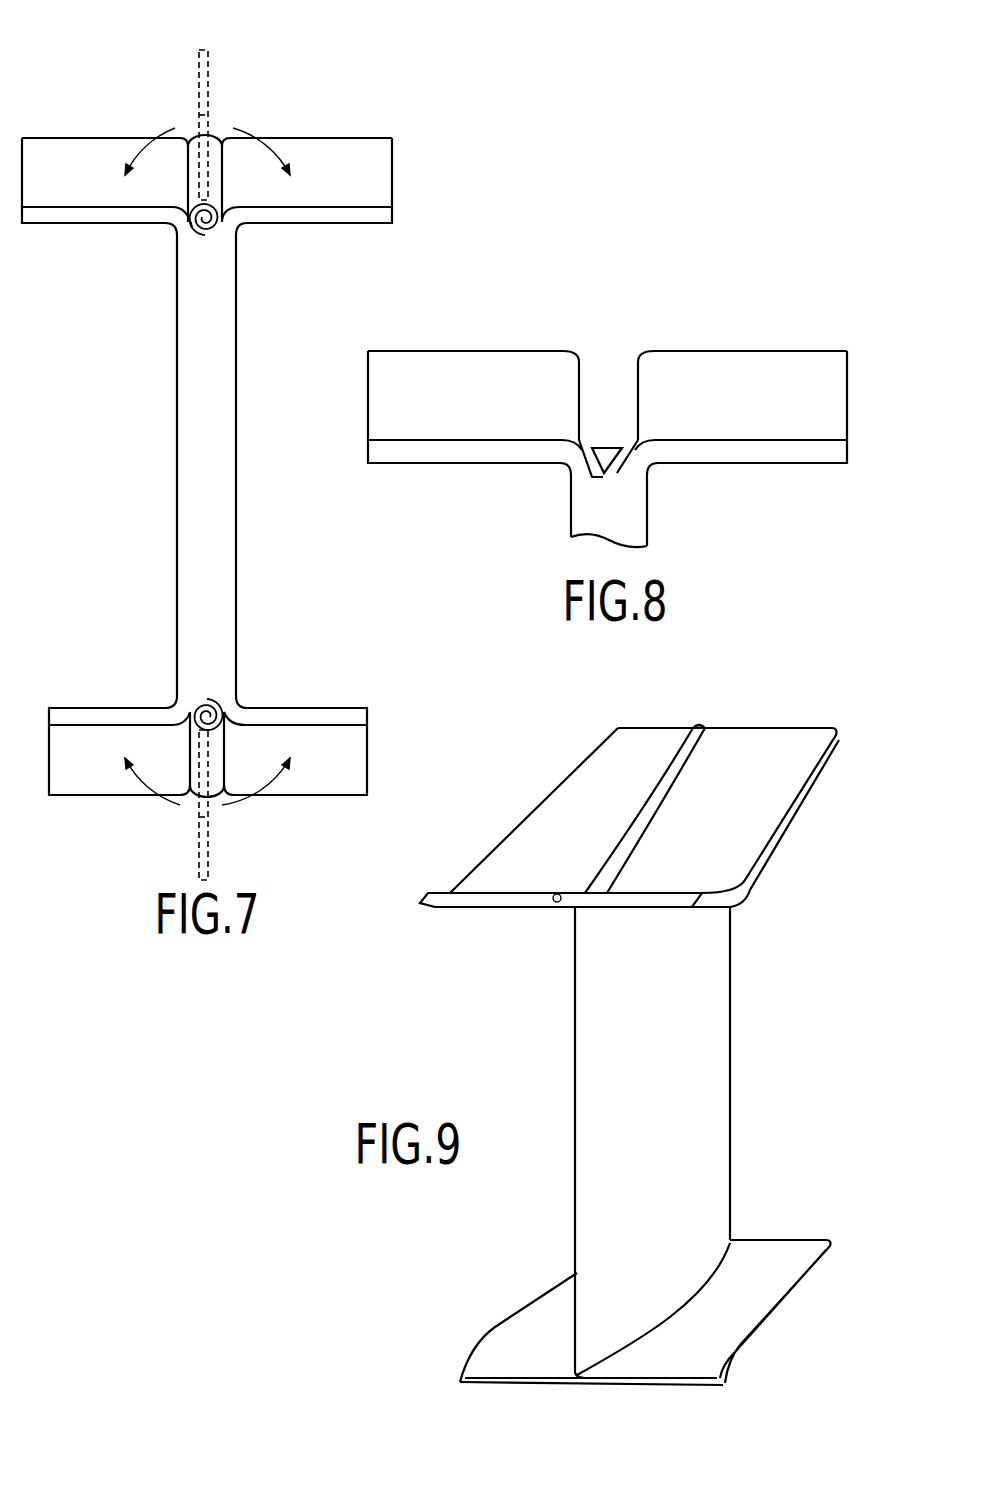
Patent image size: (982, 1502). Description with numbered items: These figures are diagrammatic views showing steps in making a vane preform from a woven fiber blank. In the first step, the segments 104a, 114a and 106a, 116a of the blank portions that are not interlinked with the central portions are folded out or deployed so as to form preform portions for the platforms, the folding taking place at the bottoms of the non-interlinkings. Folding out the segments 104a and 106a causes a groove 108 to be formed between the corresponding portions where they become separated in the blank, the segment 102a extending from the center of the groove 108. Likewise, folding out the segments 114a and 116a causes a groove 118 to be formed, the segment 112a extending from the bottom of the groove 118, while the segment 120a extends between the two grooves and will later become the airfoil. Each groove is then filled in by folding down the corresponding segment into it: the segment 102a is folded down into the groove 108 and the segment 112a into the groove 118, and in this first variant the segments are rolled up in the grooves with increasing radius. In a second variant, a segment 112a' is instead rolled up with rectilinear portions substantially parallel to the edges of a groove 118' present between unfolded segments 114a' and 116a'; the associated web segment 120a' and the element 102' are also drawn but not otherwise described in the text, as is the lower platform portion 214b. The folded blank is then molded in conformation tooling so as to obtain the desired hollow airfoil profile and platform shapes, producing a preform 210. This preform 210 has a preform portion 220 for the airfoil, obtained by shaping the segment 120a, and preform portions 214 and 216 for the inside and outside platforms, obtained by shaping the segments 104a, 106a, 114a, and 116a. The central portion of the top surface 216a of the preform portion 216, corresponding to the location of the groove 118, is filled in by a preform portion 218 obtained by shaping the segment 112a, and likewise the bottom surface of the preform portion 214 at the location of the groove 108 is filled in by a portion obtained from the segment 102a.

In FIG. 7, the segment 102a is at (217, 797).
In FIG. 7, the segment 104a is at (67, 780).
In FIG. 7, the segment 106a is at (340, 777).
In FIG. 7, the groove 108 is at (197, 702).
In FIG. 7, the segment 112a is at (230, 152).
In FIG. 7, the segment 114a is at (107, 154).
In FIG. 7, the segment 116a is at (307, 156).
In FIG. 7, the groove 118 is at (166, 238).
In FIG. 7, the segment 120a is at (175, 465).
In FIG. 8, the segment 112a' is at (608, 366).
In FIG. 8, the unfolded segment 114a' is at (475, 386).
In FIG. 8, the unfolded segment 116a' is at (741, 388).
In FIG. 8, the groove 118' is at (639, 496).
In FIG. 8, the weld 102' is at (647, 476).
In FIG. 8, the web 120a' is at (572, 511).
In FIG. 9, the preform 210 is at (497, 1002).
In FIG. 9, the preform portion 214 is at (555, 1307).
In FIG. 9, the lower flange portion 214b is at (515, 1332).
In FIG. 9, the preform portion 216 is at (568, 810).
In FIG. 9, the top surface 216a is at (778, 740).
In FIG. 9, the preform portion 218 is at (627, 848).
In FIG. 9, the preform portion 220 is at (715, 1070).